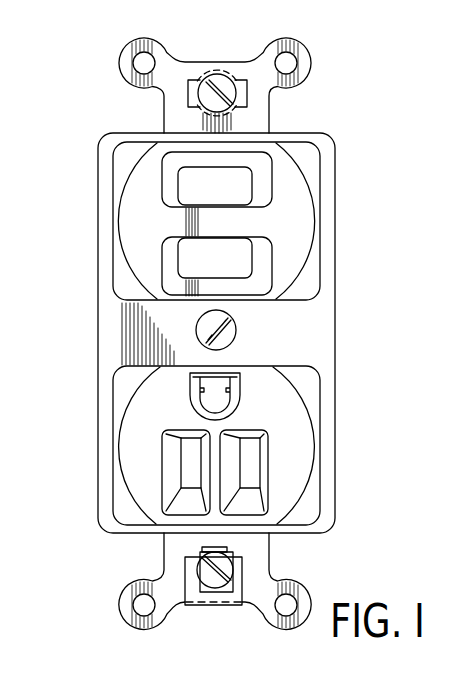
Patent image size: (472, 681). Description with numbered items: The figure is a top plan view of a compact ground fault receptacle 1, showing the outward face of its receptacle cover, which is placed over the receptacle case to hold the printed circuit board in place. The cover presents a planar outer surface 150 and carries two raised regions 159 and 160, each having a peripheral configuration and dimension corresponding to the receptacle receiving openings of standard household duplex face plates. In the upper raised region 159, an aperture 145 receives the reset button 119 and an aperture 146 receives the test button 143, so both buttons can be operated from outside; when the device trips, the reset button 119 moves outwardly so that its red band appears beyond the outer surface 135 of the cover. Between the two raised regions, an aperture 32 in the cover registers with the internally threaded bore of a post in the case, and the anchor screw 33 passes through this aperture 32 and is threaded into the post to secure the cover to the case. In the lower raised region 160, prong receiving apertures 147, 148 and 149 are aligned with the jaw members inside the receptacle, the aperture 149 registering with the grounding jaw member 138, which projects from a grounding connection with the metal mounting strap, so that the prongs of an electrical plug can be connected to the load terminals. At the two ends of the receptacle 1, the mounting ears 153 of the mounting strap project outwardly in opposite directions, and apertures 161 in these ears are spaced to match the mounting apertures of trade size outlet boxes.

The ground fault receptacle 1 is at (337, 315).
The mounting ears 153 is at (188, 62).
The apertures 161 is at (243, 82).
The reset button 119 is at (183, 177).
The raised region 159 is at (133, 205).
The aperture 145 is at (260, 165).
The test button 143 is at (187, 255).
The aperture 146 is at (260, 248).
The anchor screw 33 is at (197, 325).
The planar outer surface 150 is at (117, 335).
The outer surface 135 is at (298, 346).
The aperture 32 is at (236, 341).
The prong receiving aperture 149 is at (200, 388).
The grounding jaw member 138 is at (237, 390).
The raised region 160 is at (148, 422).
The prong receiving aperture 147 is at (178, 478).
The prong receiving aperture 148 is at (252, 472).